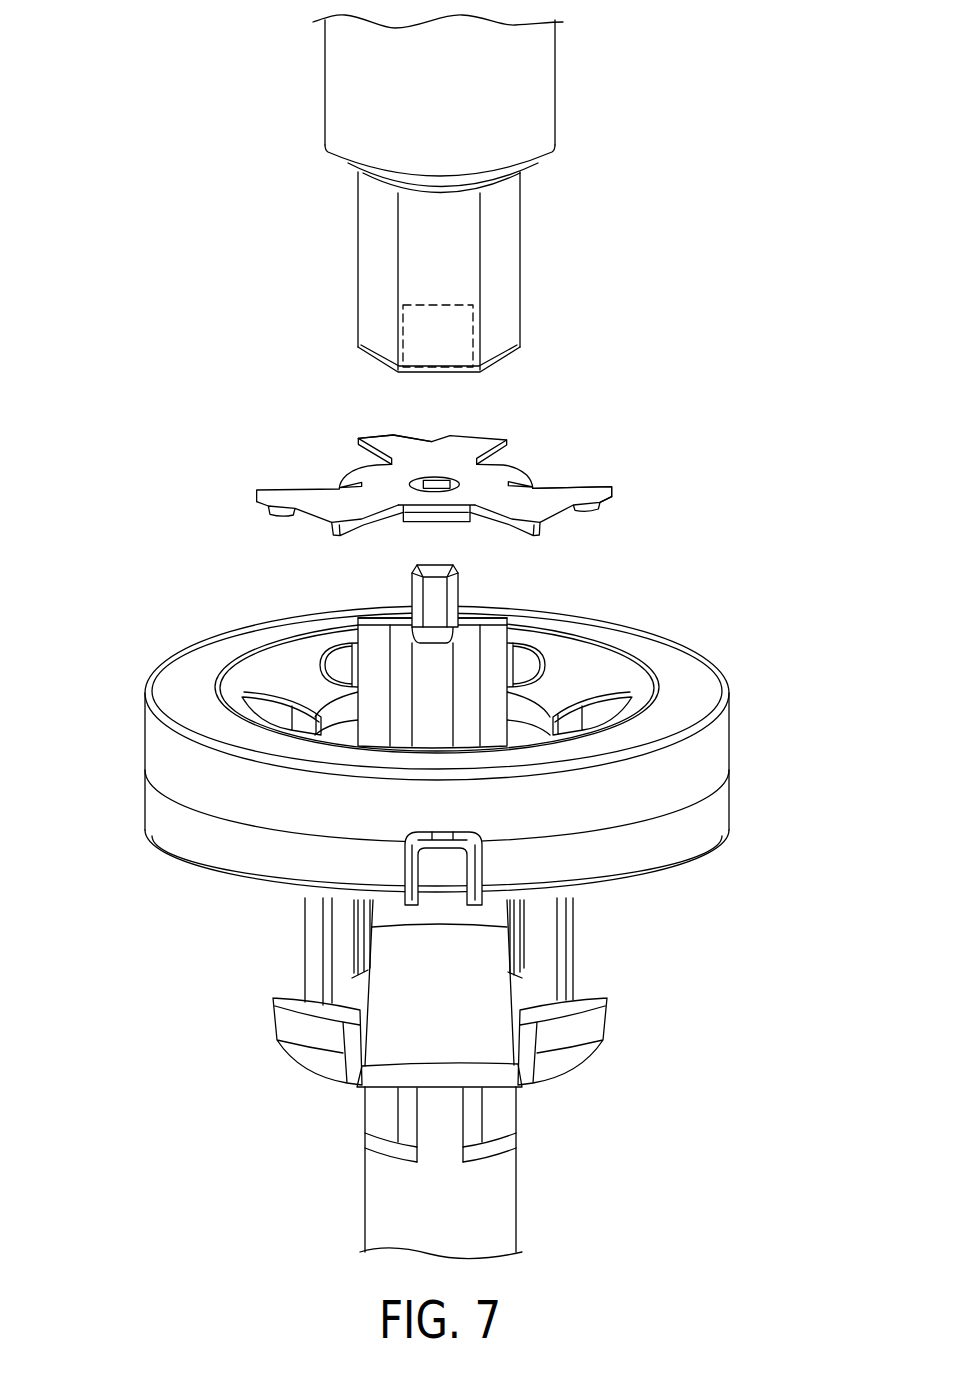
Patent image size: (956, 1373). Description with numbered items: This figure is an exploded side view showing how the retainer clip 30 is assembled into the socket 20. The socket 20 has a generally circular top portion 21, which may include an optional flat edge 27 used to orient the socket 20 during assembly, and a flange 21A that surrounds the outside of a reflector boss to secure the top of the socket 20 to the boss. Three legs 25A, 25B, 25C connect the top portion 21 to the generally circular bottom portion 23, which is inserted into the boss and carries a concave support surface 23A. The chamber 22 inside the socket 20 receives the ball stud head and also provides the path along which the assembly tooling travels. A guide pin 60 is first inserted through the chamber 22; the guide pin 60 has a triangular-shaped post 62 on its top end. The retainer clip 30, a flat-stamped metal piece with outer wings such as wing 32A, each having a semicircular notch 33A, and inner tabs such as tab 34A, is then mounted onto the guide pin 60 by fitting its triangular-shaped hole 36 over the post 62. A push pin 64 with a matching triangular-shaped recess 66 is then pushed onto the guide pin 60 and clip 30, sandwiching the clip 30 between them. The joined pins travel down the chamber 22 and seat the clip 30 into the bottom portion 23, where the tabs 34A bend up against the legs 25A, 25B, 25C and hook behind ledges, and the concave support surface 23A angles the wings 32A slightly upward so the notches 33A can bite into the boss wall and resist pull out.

The push pin 64 is at (510, 258).
The triangular-shaped recess 66 is at (442, 316).
The retainer clip 30 is at (604, 386).
The outer wing 32A is at (480, 440).
The semicircular notch 33A is at (436, 441).
The inner tab 34A is at (508, 472).
The triangular-shaped hole 36 is at (432, 486).
The triangular-shaped post 62 is at (452, 588).
The flat edge 27 is at (662, 642).
The socket 20 is at (460, 684).
The chamber 22 is at (344, 703).
The top portion 21 is at (136, 661).
The flange 21A is at (712, 822).
The leg 25B is at (328, 930).
The leg 25C is at (545, 948).
The leg 25A is at (390, 1053).
The bottom portion 23 is at (429, 1022).
The concave support surface 23A is at (563, 1008).
The guide pin 60 is at (505, 1215).